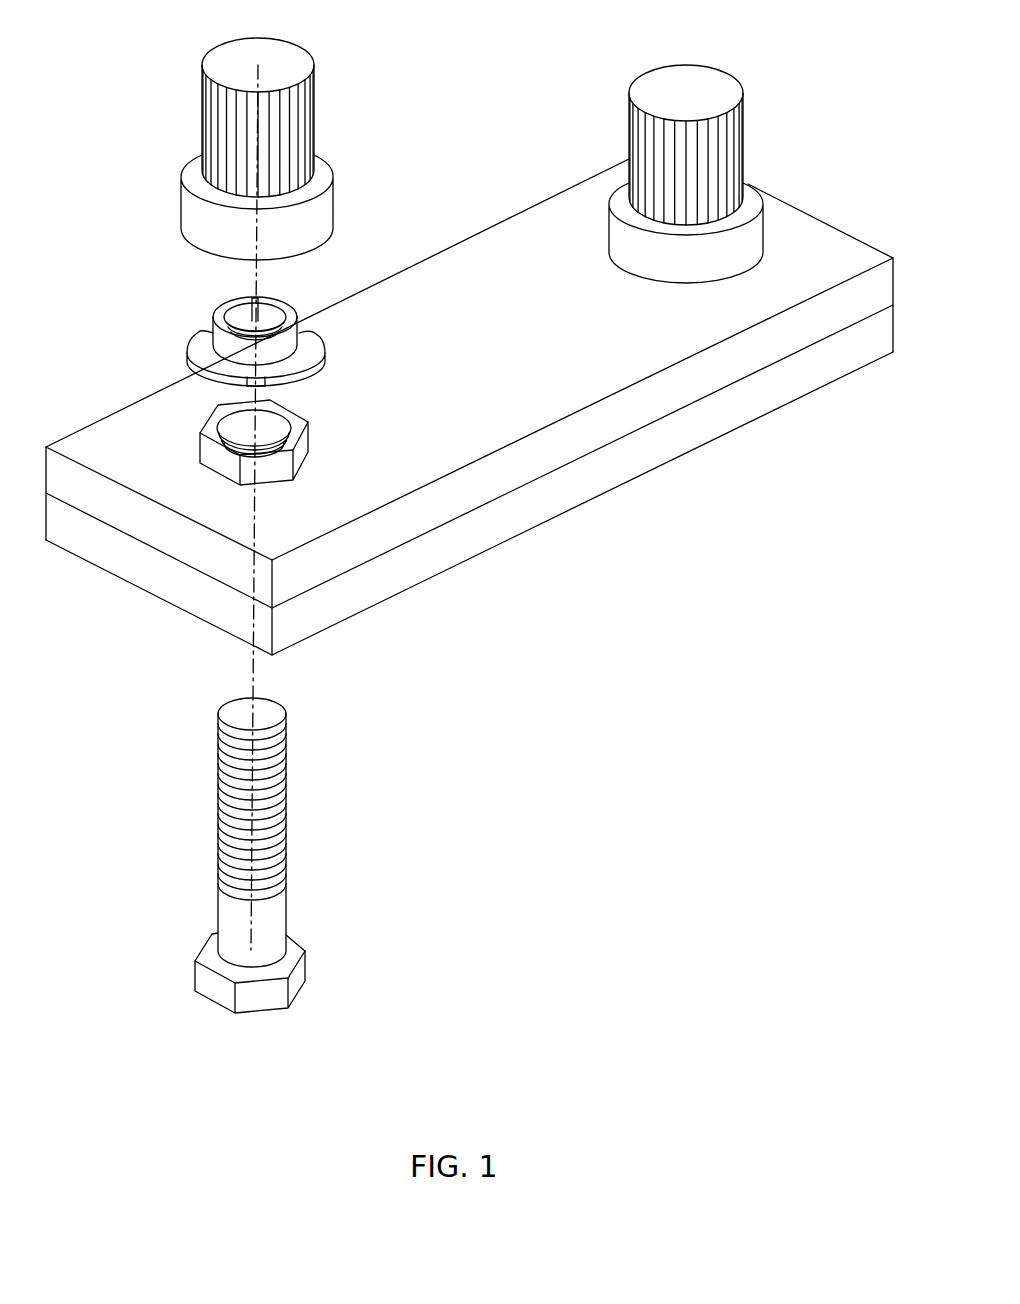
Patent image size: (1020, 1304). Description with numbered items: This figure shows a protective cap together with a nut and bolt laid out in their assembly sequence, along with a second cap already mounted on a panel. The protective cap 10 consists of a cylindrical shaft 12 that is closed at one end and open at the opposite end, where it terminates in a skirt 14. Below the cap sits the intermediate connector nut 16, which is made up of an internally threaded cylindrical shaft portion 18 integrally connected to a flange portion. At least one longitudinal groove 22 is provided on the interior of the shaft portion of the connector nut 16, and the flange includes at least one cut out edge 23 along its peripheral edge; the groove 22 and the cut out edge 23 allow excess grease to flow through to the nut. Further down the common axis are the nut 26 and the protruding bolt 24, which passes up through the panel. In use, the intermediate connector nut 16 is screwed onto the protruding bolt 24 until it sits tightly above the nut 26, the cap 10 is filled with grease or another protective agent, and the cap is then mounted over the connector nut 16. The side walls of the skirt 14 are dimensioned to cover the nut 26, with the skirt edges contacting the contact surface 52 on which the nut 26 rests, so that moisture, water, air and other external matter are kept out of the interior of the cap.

The protective cap 10 is at (767, 128).
The cylindrical shaft 12 is at (308, 94).
The skirt 14 is at (328, 200).
The intermediate connector nut 16 is at (303, 322).
The internally threaded cylindrical shaft portion 18 is at (212, 323).
The longitudinal groove 22 is at (290, 308).
The cut out edge 23 is at (256, 300).
The bolt 24 is at (288, 754).
The nut 26 is at (305, 441).
The contact surface 52 is at (550, 458).